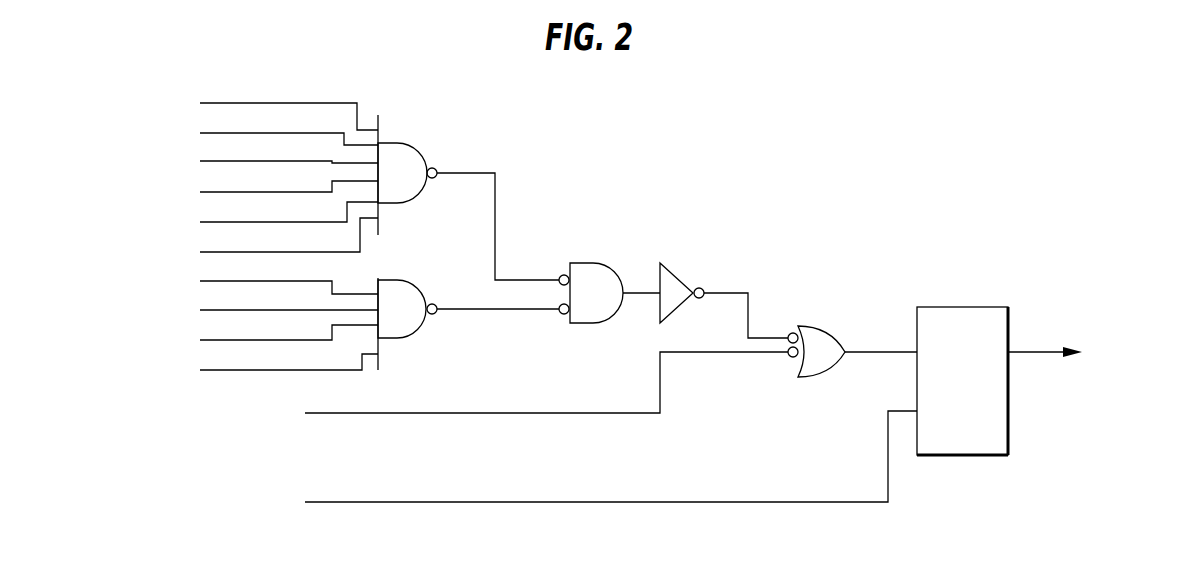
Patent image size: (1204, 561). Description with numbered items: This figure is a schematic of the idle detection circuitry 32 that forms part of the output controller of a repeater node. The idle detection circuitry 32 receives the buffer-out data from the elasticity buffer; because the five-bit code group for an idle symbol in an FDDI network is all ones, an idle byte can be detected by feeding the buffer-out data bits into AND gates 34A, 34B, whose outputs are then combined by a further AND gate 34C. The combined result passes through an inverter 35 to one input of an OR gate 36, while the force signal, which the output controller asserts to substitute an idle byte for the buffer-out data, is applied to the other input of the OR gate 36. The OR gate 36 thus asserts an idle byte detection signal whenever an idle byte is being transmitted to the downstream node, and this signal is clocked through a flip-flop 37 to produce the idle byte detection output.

The idle detection circuitry 32 is at (772, 223).
The AND gate 34A is at (407, 160).
The AND gate 34B is at (398, 327).
The AND gate 34C is at (595, 278).
The inverter 35 is at (675, 285).
The OR gate 36 is at (810, 367).
The D flip-flop 37 is at (995, 447).